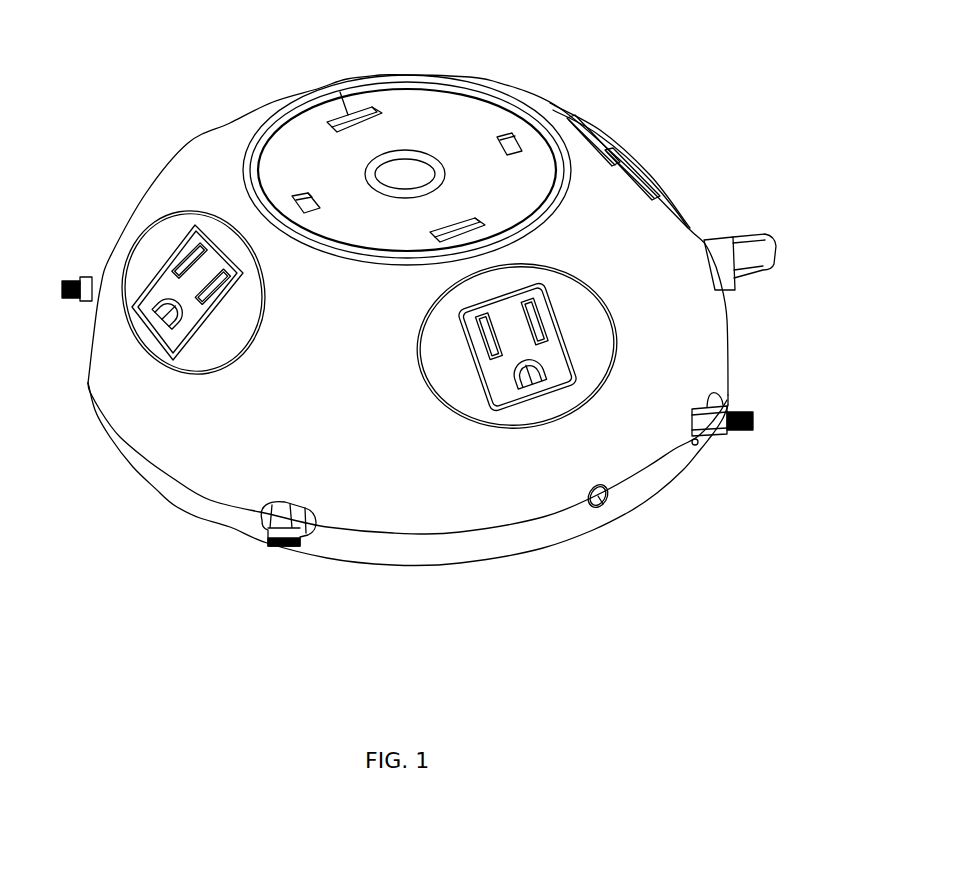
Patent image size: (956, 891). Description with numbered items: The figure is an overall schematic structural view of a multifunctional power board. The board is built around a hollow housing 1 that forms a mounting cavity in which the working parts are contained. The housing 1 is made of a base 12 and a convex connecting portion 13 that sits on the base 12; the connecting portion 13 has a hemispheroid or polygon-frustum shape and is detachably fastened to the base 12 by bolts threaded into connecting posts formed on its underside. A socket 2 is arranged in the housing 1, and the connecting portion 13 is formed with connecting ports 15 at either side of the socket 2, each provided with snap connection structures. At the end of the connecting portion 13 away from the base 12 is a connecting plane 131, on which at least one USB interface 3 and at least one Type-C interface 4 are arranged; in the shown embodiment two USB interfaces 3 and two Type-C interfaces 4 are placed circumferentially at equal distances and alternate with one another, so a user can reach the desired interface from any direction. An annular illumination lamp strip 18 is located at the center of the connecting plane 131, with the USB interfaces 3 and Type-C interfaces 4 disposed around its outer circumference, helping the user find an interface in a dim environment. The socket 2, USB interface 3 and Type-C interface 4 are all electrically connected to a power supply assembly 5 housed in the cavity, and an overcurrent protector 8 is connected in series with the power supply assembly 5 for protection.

The housing 1 is at (408, 356).
The base 12 is at (482, 537).
The connecting portion 13 is at (427, 513).
The connecting plane 131 is at (433, 110).
The socket 2 is at (177, 273).
The connecting port 15 is at (177, 245).
The USB interface 3 is at (315, 88).
The Type-C interface 4 is at (293, 197).
The illumination lamp strip 18 is at (433, 160).
The power supply assembly 5 is at (730, 222).
The overcurrent protector 8 is at (608, 492).